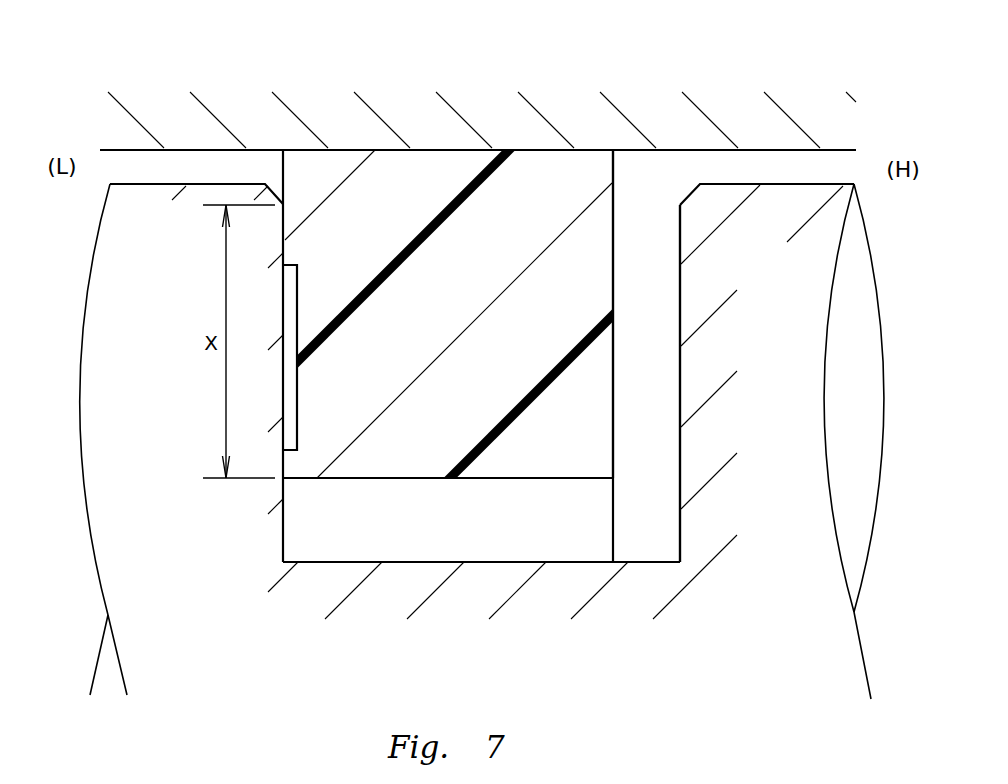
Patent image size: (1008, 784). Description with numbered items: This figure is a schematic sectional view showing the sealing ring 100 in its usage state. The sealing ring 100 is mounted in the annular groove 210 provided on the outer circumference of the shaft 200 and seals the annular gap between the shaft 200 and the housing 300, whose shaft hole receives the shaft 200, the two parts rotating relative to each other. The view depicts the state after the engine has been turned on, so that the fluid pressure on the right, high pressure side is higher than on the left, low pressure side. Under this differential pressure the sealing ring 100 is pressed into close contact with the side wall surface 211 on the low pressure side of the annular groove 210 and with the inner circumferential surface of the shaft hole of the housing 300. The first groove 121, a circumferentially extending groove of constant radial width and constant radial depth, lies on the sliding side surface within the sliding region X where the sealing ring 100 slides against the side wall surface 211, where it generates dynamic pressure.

The sealing ring 100 is at (372, 355).
The first groove 121 is at (288, 384).
The shaft 200 is at (482, 441).
The annular groove 210 is at (657, 475).
The side wall surface 211 is at (284, 532).
The housing 300 is at (478, 96).